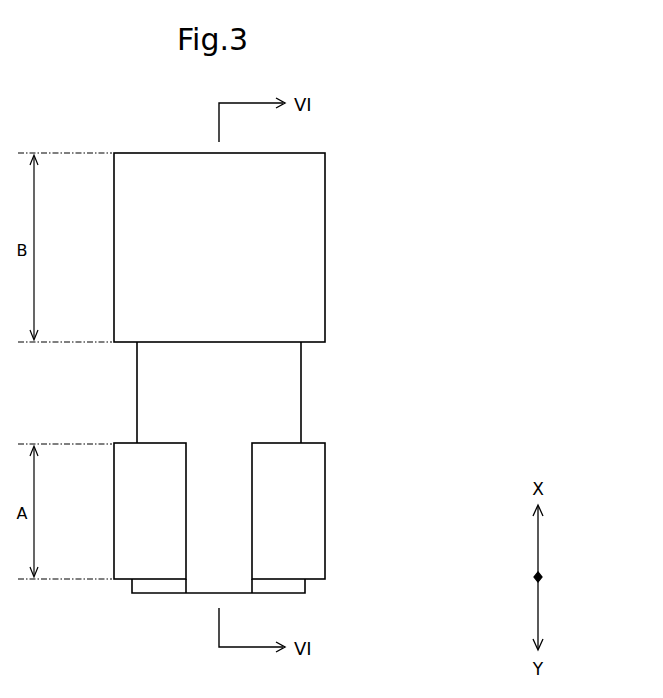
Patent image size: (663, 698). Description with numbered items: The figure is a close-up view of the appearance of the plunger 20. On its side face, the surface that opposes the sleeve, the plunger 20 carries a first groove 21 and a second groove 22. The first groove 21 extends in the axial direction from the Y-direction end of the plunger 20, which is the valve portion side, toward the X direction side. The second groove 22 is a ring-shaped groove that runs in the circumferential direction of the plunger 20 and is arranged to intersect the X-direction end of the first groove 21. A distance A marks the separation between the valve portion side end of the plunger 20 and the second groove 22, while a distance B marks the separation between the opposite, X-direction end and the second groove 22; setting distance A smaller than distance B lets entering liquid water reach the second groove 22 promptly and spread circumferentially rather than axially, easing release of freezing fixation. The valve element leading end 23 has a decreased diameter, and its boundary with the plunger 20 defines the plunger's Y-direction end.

The plunger 20 is at (386, 134).
The first groove 21 is at (233, 507).
The second groove 22 is at (288, 397).
The valve element leading end 23 is at (305, 585).